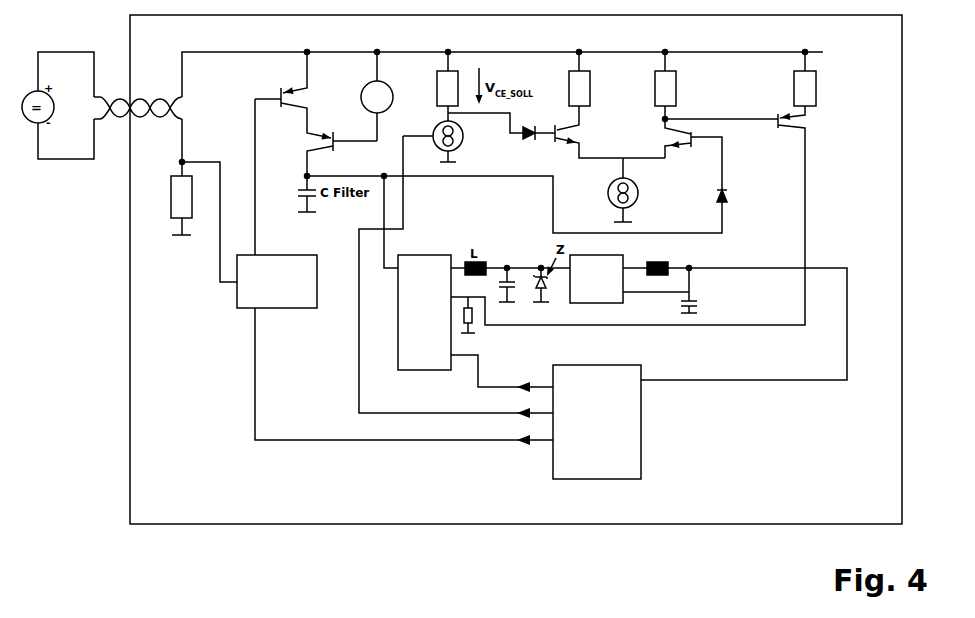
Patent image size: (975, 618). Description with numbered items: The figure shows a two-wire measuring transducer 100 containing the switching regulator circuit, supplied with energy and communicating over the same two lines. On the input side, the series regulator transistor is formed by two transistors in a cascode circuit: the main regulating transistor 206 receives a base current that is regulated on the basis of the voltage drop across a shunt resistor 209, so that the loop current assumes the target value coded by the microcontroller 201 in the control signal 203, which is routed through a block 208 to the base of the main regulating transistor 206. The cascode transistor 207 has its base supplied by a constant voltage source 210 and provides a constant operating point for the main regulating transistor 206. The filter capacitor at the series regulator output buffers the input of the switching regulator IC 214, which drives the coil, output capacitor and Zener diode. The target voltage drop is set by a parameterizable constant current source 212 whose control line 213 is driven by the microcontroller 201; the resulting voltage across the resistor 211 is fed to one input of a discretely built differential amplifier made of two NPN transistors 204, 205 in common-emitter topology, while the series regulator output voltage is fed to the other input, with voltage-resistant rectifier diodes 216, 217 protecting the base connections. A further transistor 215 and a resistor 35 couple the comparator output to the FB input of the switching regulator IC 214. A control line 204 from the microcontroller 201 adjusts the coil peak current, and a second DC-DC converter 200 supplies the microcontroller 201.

The measuring transducer 100 is at (678, 525).
The second DC-DC converter 200 is at (633, 246).
The microcontroller 201 is at (593, 356).
The control signal 203 is at (250, 358).
The NPN transistor / control input 204 is at (559, 122).
The NPN transistor 205 is at (695, 155).
The main regulating transistor 206 is at (270, 88).
The cascode transistor 207 is at (336, 126).
The measuring unit 208 is at (249, 235).
The shunt resistor 209 is at (169, 205).
The constant voltage source 210 is at (386, 96).
The resistor 211 is at (466, 74).
The constant current source 212 is at (471, 147).
The control line 213 is at (456, 270).
The switching regulator IC 214 is at (424, 304).
The transistor 215 is at (642, 188).
The rectifier diode 216 is at (501, 137).
The rectifier diode 217 is at (735, 194).
The resistor 35 is at (465, 293).